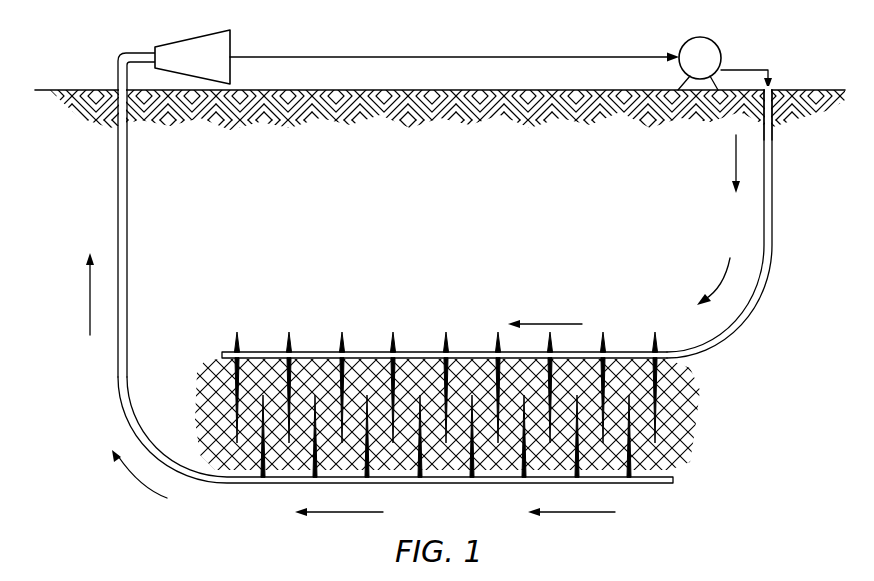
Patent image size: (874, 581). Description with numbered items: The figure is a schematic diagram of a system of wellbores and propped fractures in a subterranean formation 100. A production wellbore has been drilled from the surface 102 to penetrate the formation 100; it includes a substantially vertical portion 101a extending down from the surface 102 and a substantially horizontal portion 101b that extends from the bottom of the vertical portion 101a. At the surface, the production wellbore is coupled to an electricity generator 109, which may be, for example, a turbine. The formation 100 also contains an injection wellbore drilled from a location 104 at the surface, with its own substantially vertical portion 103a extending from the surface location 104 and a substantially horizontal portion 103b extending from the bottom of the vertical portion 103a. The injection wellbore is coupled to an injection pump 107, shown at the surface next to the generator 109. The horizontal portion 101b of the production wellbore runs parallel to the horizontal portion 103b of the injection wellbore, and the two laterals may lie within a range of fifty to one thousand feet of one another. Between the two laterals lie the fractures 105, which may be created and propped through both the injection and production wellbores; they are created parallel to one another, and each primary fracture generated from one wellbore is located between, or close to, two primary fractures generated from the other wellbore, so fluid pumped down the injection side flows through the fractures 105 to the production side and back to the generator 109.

The subterranean formation 100 is at (472, 151).
The vertical portion of production wellbore 101a is at (107, 211).
The horizontal portion of production wellbore 101b is at (672, 485).
The surface 102 is at (78, 89).
The vertical portion of injection wellbore 103a is at (786, 219).
The horizontal portion of injection wellbore 103b is at (367, 350).
The surface location of injection wellbore 104 is at (776, 88).
The fractures 105 is at (657, 412).
The injection pump 107 is at (717, 44).
The electricity generator 109 is at (190, 38).